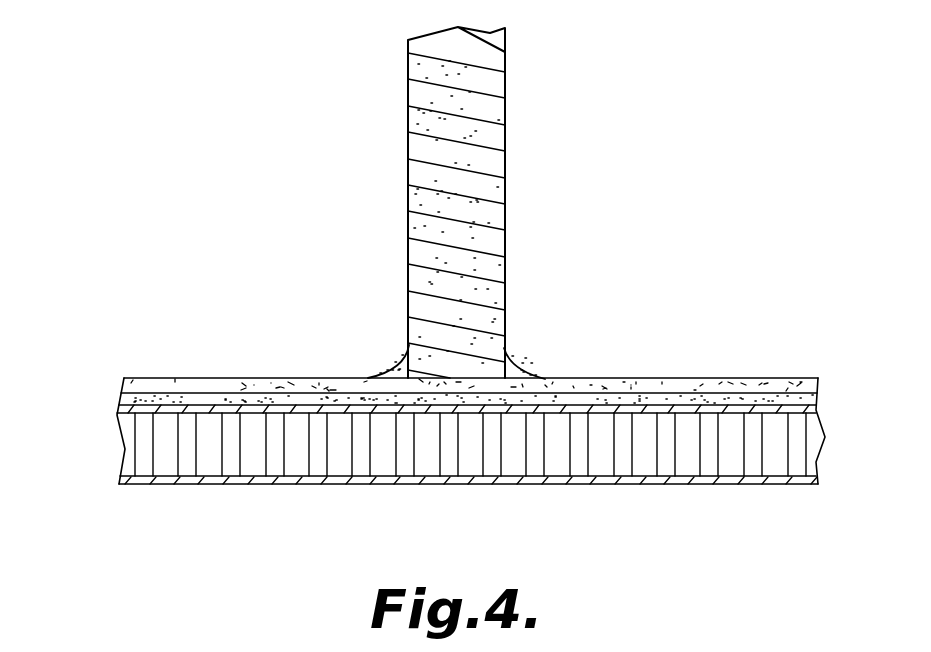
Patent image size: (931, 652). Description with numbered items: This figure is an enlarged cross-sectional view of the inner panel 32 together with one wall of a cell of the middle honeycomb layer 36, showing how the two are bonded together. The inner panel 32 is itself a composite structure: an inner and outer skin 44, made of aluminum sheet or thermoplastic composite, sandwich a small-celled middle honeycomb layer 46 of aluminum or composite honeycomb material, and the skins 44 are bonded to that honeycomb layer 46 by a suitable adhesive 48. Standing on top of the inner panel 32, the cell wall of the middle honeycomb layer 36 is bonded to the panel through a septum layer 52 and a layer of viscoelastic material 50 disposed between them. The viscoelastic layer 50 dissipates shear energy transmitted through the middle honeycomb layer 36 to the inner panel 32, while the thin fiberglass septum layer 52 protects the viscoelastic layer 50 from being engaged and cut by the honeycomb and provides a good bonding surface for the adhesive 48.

The inner panel 32 is at (118, 438).
The middle honeycomb layer 36 is at (505, 180).
The inner and outer skins 44 is at (122, 412).
The middle small-celled honeycomb layer 46 is at (342, 455).
The adhesive 48 is at (382, 372).
The viscoelastic layer 50 is at (717, 400).
The septum layer 52 is at (633, 378).